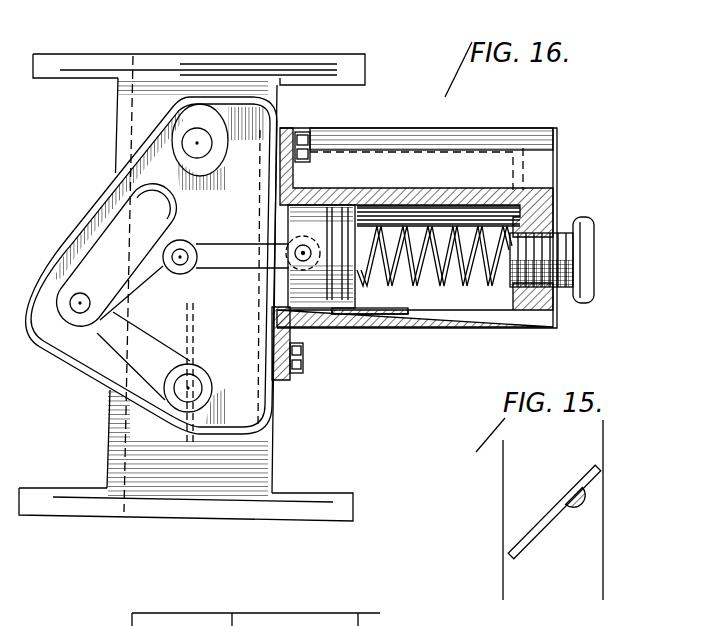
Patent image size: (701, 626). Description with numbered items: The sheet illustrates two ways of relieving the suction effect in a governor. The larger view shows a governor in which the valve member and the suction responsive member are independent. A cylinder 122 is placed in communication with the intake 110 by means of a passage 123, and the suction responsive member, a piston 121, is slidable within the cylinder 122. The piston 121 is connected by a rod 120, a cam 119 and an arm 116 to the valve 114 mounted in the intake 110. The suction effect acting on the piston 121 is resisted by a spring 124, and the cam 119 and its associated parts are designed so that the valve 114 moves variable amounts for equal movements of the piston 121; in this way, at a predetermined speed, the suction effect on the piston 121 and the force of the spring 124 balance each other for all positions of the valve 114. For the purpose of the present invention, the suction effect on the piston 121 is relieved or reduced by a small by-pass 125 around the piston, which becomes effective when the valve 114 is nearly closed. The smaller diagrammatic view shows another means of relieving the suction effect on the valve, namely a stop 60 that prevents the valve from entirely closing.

In FIG. 16, the intake 110 is at (126, 443).
In FIG. 16, the valve 114 is at (194, 336).
In FIG. 16, the arm 116 is at (115, 337).
In FIG. 16, the cam 119 is at (150, 270).
In FIG. 16, the rod 120 is at (232, 249).
In FIG. 16, the piston 121 is at (310, 324).
In FIG. 16, the cylinder 122 is at (478, 298).
In FIG. 16, the passage 123 is at (527, 163).
In FIG. 16, the spring 124 is at (433, 288).
In FIG. 16, the by-pass 125 is at (393, 314).
In FIG. 15, the stop 60 is at (515, 535).